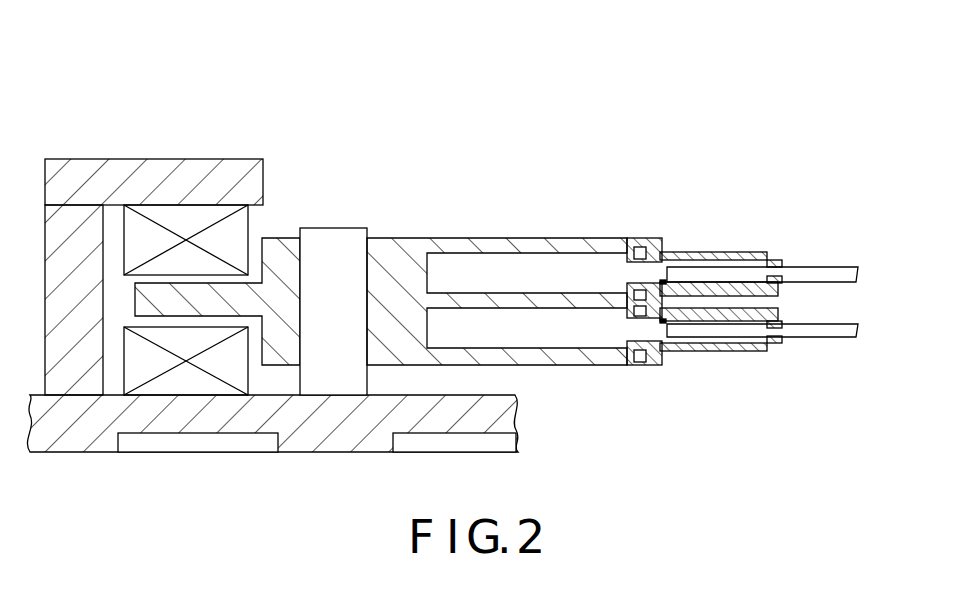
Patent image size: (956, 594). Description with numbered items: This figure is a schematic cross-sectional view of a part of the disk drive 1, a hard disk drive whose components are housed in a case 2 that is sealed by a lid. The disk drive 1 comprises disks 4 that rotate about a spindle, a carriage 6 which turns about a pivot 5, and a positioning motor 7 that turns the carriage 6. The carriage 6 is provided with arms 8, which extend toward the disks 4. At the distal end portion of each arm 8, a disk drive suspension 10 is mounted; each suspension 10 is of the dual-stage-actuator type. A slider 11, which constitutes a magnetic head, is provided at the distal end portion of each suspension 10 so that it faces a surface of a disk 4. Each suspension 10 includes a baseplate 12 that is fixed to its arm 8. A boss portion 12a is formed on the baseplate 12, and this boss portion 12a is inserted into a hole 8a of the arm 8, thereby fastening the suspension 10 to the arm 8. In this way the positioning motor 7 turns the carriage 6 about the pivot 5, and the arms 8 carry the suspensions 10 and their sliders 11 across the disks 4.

The disk drive 1 is at (203, 110).
The case 2 is at (88, 452).
The disk 4 is at (838, 267).
The pivot 5 is at (334, 240).
The carriage 6 is at (480, 228).
The positioning motor 7 is at (184, 383).
The arm 8 is at (574, 236).
The hole 8a is at (641, 238).
The disk drive suspension 10 is at (730, 300).
The slider 11 is at (785, 260).
The baseplate 12 is at (668, 250).
The boss portion 12a is at (636, 247).